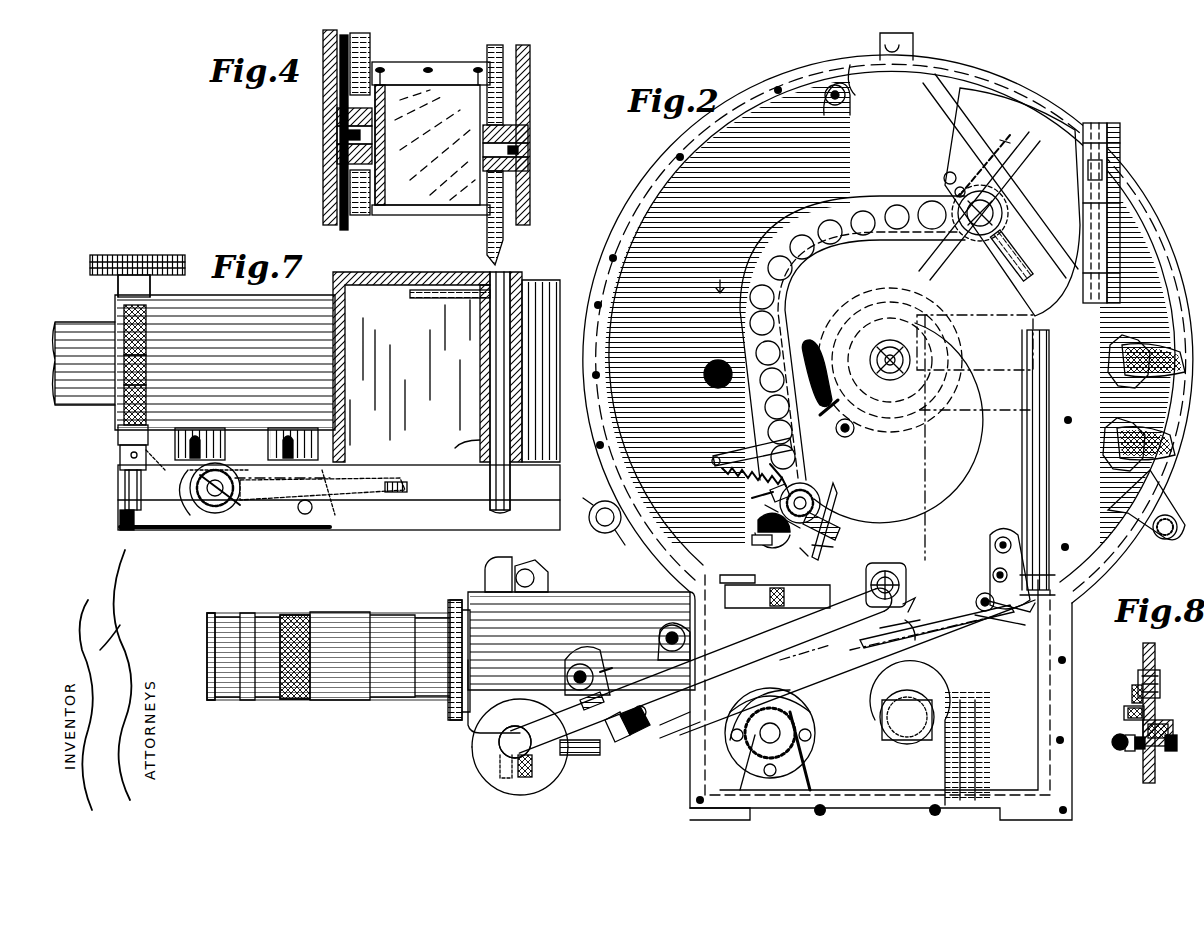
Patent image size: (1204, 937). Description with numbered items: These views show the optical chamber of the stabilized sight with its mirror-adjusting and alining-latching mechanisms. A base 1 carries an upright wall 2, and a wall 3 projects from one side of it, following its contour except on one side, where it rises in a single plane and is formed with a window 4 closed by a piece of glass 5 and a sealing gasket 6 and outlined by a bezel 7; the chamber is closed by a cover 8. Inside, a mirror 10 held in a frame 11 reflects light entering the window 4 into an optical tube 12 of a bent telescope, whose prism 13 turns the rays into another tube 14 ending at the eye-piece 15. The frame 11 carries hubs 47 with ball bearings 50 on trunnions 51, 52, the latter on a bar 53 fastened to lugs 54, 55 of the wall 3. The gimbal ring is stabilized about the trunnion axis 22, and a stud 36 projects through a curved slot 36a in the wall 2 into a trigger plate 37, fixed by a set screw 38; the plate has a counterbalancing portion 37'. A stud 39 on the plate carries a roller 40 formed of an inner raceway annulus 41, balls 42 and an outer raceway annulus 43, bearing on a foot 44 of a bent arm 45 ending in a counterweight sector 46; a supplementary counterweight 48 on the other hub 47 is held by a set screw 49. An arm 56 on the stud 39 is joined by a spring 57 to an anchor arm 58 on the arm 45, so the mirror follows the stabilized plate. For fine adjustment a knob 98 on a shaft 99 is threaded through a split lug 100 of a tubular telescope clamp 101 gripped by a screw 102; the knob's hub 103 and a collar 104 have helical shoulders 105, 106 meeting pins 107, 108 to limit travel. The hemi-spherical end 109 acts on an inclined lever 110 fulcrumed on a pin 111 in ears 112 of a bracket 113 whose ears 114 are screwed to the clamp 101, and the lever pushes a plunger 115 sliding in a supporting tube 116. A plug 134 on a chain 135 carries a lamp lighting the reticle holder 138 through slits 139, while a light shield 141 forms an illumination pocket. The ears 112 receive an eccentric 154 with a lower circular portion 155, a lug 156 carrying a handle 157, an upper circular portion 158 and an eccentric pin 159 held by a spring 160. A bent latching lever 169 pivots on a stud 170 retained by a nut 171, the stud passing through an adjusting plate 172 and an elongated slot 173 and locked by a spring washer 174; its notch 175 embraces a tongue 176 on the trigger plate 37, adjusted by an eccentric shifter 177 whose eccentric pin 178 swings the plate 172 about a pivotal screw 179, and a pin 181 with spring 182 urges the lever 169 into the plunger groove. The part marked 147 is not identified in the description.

In FIG. 2, the base 1 is at (967, 790).
In FIG. 2, the wall 2 is at (720, 278).
In FIG. 4, the wall 2 is at (530, 63).
In FIG. 7, the wall 2 is at (540, 280).
In FIG. 2, the wall 3 is at (672, 190).
In FIG. 7, the wall 3 is at (338, 335).
In FIG. 2, the window 4 is at (1105, 178).
In FIG. 2, the piece of glass 5 is at (1104, 198).
In FIG. 2, the sealing gasket 6 is at (1112, 230).
In FIG. 2, the bezel 7 is at (1118, 254).
In FIG. 2, the cover 8 is at (1025, 520).
In FIG. 4, the cover 8 is at (323, 106).
In FIG. 2, the mirror 10 is at (1030, 178).
In FIG. 4, the mirror 10 is at (440, 190).
In FIG. 2, the mirror frame 11 is at (1022, 158).
In FIG. 4, the mirror frame 11 is at (454, 62).
In FIG. 2, the optical tube 12 is at (1025, 468).
In FIG. 2, the prism 13 is at (980, 662).
In FIG. 2, the telescope tube 14 is at (765, 600).
In FIG. 2, the eye-piece 15 is at (208, 628).
In FIG. 2, the trunnion axis 22 is at (905, 358).
In FIG. 2, the stud 36 is at (852, 438).
In FIG. 2, the curved slot 36a is at (815, 322).
In FIG. 2, the trigger plate 37 is at (898, 405).
In FIG. 2, the counterbalancing portion 37' is at (969, 437).
In FIG. 2, the set screw 38 is at (828, 422).
In FIG. 2, the stud 39 is at (812, 490).
In FIG. 2, the roller 40 is at (825, 500).
In FIG. 2, the inner raceway annulus 41 is at (765, 506).
In FIG. 2, the balls 42 is at (790, 520).
In FIG. 2, the outer raceway annulus 43 is at (805, 490).
In FIG. 2, the foot 44 is at (760, 496).
In FIG. 2, the bent arm 45 is at (775, 240).
In FIG. 4, the bent arm 45 is at (503, 240).
In FIG. 2, the sector 46 is at (947, 140).
In FIG. 4, the sector 46 is at (502, 58).
In FIG. 4, the hubs 47 is at (348, 167).
In FIG. 2, the supplementary counterweight 48 is at (995, 130).
In FIG. 4, the supplementary counterweight 48 is at (370, 55).
In FIG. 2, the set screw 49 is at (944, 178).
In FIG. 4, the ball bearings 50 is at (340, 128).
In FIG. 4, the trunnion 51 is at (527, 150).
In FIG. 2, the trunnion 52 is at (998, 228).
In FIG. 4, the trunnion 52 is at (345, 135).
In FIG. 2, the bar 53 is at (912, 155).
In FIG. 4, the bar 53 is at (350, 190).
In FIG. 2, the lug 54 is at (880, 80).
In FIG. 2, the lug 55 is at (1035, 318).
In FIG. 2, the arm 56 is at (768, 468).
In FIG. 2, the spring 57 is at (726, 474).
In FIG. 2, the anchor arm 58 is at (738, 452).
In FIG. 2, the knob 98 is at (478, 755).
In FIG. 7, the knob 98 is at (115, 255).
In FIG. 2, the shaft 99 is at (498, 740).
In FIG. 7, the shaft 99 is at (118, 432).
In FIG. 2, the split lug 100 is at (505, 778).
In FIG. 7, the split lug 100 is at (148, 340).
In FIG. 2, the tubular telescope clamp 101 is at (552, 615).
In FIG. 7, the tubular telescope clamp 101 is at (278, 322).
In FIG. 2, the screw 102 is at (500, 765).
In FIG. 7, the hub 103 is at (150, 285).
In FIG. 7, the collar 104 is at (120, 460).
In FIG. 7, the shoulder 105 is at (118, 300).
In FIG. 7, the shoulder 106 is at (168, 460).
In FIG. 7, the pin 107 is at (150, 325).
In FIG. 7, the pin 108 is at (118, 415).
In FIG. 7, the hemi-spherical end 109 is at (125, 500).
In FIG. 2, the inclined lever 110 is at (548, 775).
In FIG. 7, the inclined lever 110 is at (118, 522).
In FIG. 2, the pin 111 is at (670, 625).
In FIG. 7, the pin 111 is at (306, 514).
In FIG. 2, the ears 112 is at (548, 672).
In FIG. 7, the ears 112 is at (332, 515).
In FIG. 2, the bracket 113 is at (648, 660).
In FIG. 7, the bracket 113 is at (222, 460).
In FIG. 2, the ears 114 is at (578, 662).
In FIG. 7, the ears 114 is at (188, 460).
In FIG. 2, the plunger 115 is at (884, 571).
In FIG. 7, the plunger 115 is at (516, 486).
In FIG. 2, the supporting tube 116 is at (838, 532).
In FIG. 7, the supporting tube 116 is at (478, 414).
In FIG. 2, the removable plug 134 is at (752, 770).
In FIG. 2, the chain 135 is at (815, 742).
In FIG. 2, the reticle holder 138 is at (808, 600).
In FIG. 2, the slits 139 is at (840, 672).
In FIG. 2, the light shield 141 is at (755, 578).
In FIG. 7, the light shield 141 is at (418, 392).
In FIG. 2, the lug 147 is at (913, 45).
In FIG. 2, the eccentric 154 is at (600, 655).
In FIG. 7, the eccentric 154 is at (218, 508).
In FIG. 2, the lower circular portion 155 is at (615, 742).
In FIG. 2, the flat-sided lug 156 is at (632, 742).
In FIG. 7, the flat-sided lug 156 is at (225, 510).
In FIG. 2, the handle 157 is at (680, 740).
In FIG. 7, the handle 157 is at (380, 486).
In FIG. 2, the upper circular portion 158 is at (612, 665).
In FIG. 7, the upper circular portion 158 is at (212, 515).
In FIG. 2, the cylindrical pin 159 is at (590, 722).
In FIG. 7, the cylindrical pin 159 is at (192, 512).
In FIG. 2, the spring 160 is at (785, 665).
In FIG. 7, the spring 160 is at (312, 476).
In FIG. 2, the latching lever 169 is at (885, 629).
In FIG. 7, the latching lever 169 is at (440, 298).
In FIG. 8, the latching lever 169 is at (1112, 742).
In FIG. 2, the stud 170 is at (1000, 612).
In FIG. 8, the stud 170 is at (1138, 750).
In FIG. 2, the nut 171 is at (995, 630).
In FIG. 8, the nut 171 is at (1125, 748).
In FIG. 2, the adjusting plate 172 is at (1035, 588).
In FIG. 8, the adjusting plate 172 is at (1132, 697).
In FIG. 2, the elongated slot 173 is at (980, 596).
In FIG. 8, the elongated slot 173 is at (1162, 726).
In FIG. 8, the spring washer 174 is at (1168, 752).
In FIG. 2, the notch 175 is at (820, 556).
In FIG. 2, the tongue 176 is at (855, 553).
In FIG. 8, the eccentric shifter 177 is at (1160, 682).
In FIG. 2, the eccentric pin 178 is at (1001, 538).
In FIG. 8, the eccentric pin 178 is at (1140, 682).
In FIG. 2, the pivotal screw 179 is at (995, 568).
In FIG. 8, the pivotal screw 179 is at (1124, 714).
In FIG. 2, the pin 181 is at (765, 545).
In FIG. 2, the spring 182 is at (760, 527).